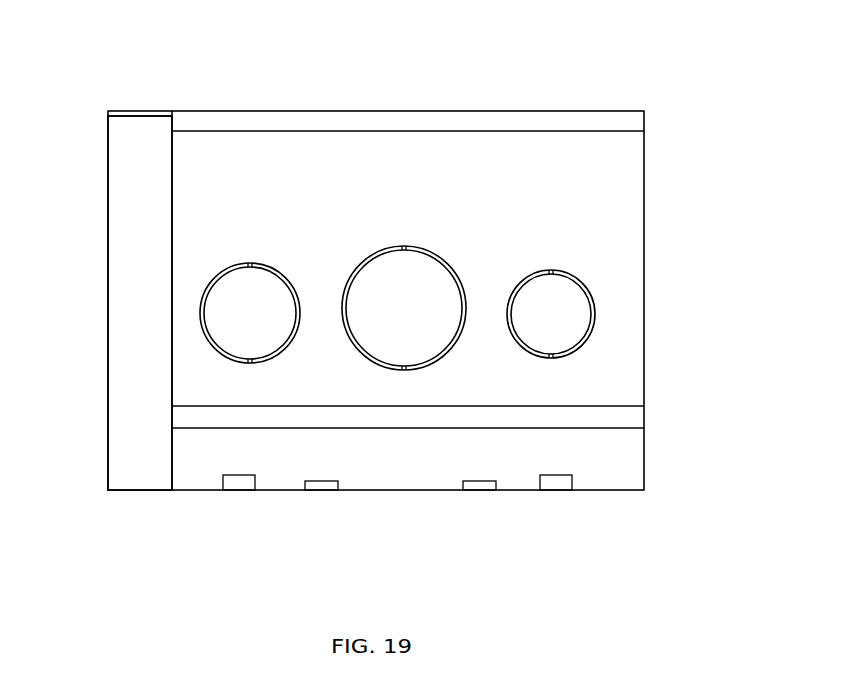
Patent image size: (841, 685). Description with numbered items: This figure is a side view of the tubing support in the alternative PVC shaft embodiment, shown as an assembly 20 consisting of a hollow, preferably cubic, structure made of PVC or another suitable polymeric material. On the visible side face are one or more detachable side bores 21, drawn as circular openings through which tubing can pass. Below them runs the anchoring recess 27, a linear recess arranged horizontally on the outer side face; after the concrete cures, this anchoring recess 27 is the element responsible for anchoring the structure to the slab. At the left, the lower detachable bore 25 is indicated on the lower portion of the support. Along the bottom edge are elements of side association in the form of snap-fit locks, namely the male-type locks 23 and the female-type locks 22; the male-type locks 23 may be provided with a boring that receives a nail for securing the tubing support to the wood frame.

The circuit board assembly 20 is at (553, 72).
The detachable side bores 21 is at (225, 317).
The female-type snap-fit lock 22 is at (325, 486).
The male-type snap-fit lock 23 is at (236, 484).
The lower detachable bore 25 is at (143, 443).
The anchoring recess 27 is at (617, 410).